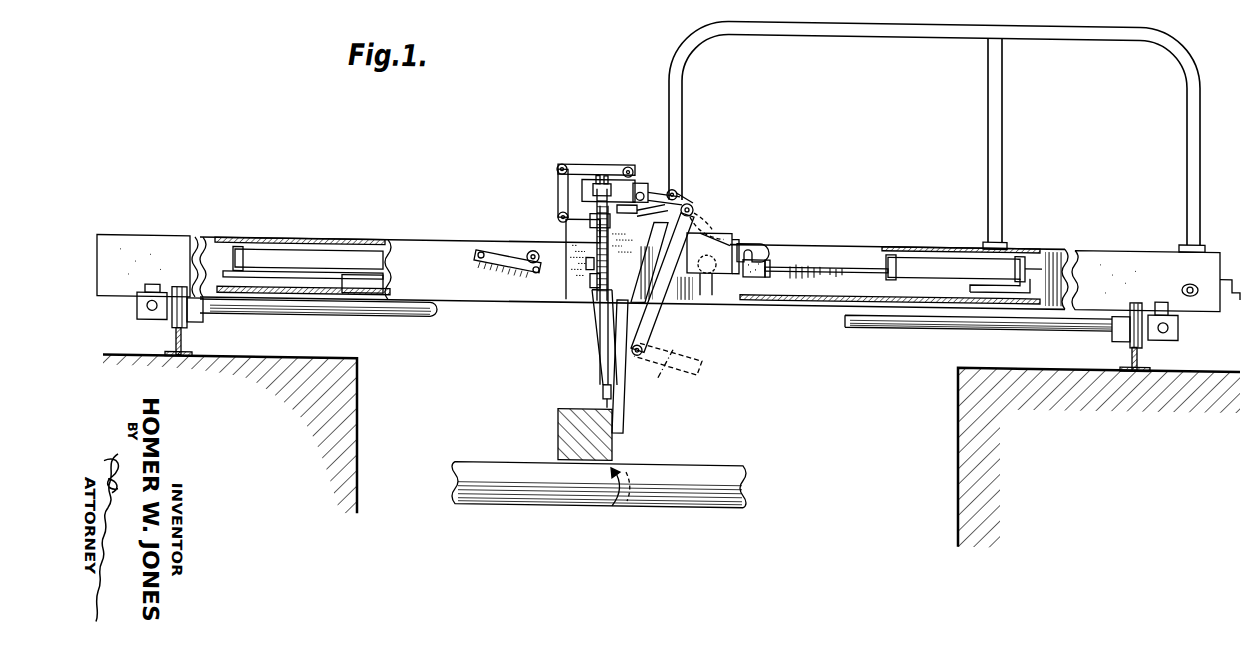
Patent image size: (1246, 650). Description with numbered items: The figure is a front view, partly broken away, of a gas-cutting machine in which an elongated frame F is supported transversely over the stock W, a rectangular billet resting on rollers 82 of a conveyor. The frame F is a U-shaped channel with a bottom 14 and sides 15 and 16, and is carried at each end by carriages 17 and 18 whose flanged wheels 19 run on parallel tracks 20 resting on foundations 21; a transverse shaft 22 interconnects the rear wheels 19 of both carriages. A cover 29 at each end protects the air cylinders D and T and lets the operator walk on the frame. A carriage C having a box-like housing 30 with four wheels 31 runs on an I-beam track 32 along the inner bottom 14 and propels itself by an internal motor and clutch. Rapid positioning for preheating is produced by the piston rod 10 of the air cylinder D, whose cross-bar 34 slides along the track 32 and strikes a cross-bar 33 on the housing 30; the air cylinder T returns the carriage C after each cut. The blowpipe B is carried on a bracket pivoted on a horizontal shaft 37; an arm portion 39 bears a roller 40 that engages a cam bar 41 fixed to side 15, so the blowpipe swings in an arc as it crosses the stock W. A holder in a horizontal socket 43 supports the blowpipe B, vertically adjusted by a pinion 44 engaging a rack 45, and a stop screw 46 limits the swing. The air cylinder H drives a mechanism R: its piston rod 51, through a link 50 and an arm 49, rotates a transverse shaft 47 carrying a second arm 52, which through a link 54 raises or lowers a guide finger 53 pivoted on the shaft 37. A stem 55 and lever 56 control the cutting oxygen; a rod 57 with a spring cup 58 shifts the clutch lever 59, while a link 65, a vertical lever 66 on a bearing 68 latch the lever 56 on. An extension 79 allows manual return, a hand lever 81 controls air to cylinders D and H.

The piston rod 10 is at (818, 259).
The bottom 14 is at (312, 292).
The side 15 is at (128, 249).
The side 16 is at (224, 246).
The carriage 17 is at (166, 322).
The carriage 18 is at (1150, 319).
The flanged wheels 19 is at (205, 319).
The tracks 20 is at (185, 343).
The foundations 21 is at (357, 408).
The transverse shaft 22 is at (396, 307).
The cover 29 is at (356, 236).
The housing 30 is at (751, 243).
The wheels 31 is at (736, 277).
The track 32 is at (375, 281).
The cross-bar 33 is at (752, 272).
The cross-bar 34 is at (775, 255).
The horizontal shaft 37 is at (600, 331).
The upper portion of arm 39 is at (590, 252).
The roller 40 is at (533, 246).
The cam bar 41 is at (507, 261).
The horizontal socket 43 is at (585, 292).
The pinion 44 is at (590, 275).
The rack 45 is at (603, 350).
The stop screw 46 is at (586, 257).
The transverse shaft 47 is at (694, 200).
The arm 49 is at (676, 182).
The link 50 is at (682, 188).
The piston rod 51 is at (645, 199).
The second arm 52 is at (690, 224).
The guide finger 53 is at (623, 388).
The link 54 is at (656, 303).
The stem 55 is at (645, 182).
The lever 56 is at (582, 231).
The rod 57 is at (702, 222).
The spring cup 58 is at (722, 232).
The clutch lever 59 is at (712, 225).
The link 65 is at (585, 164).
The vertical lever 66 is at (558, 187).
The bearing 68 is at (560, 212).
The extension 79 is at (1030, 250).
The hand lever 81 is at (1192, 283).
The rollers 82 is at (556, 482).
The gas-cutting blowpipe B is at (598, 304).
The carriage C is at (716, 233).
The air cylinder D is at (945, 252).
The frame F is at (421, 232).
The air cylinder H is at (605, 173).
The link mechanism R is at (700, 190).
The air cylinder T is at (312, 256).
The stock W is at (558, 425).